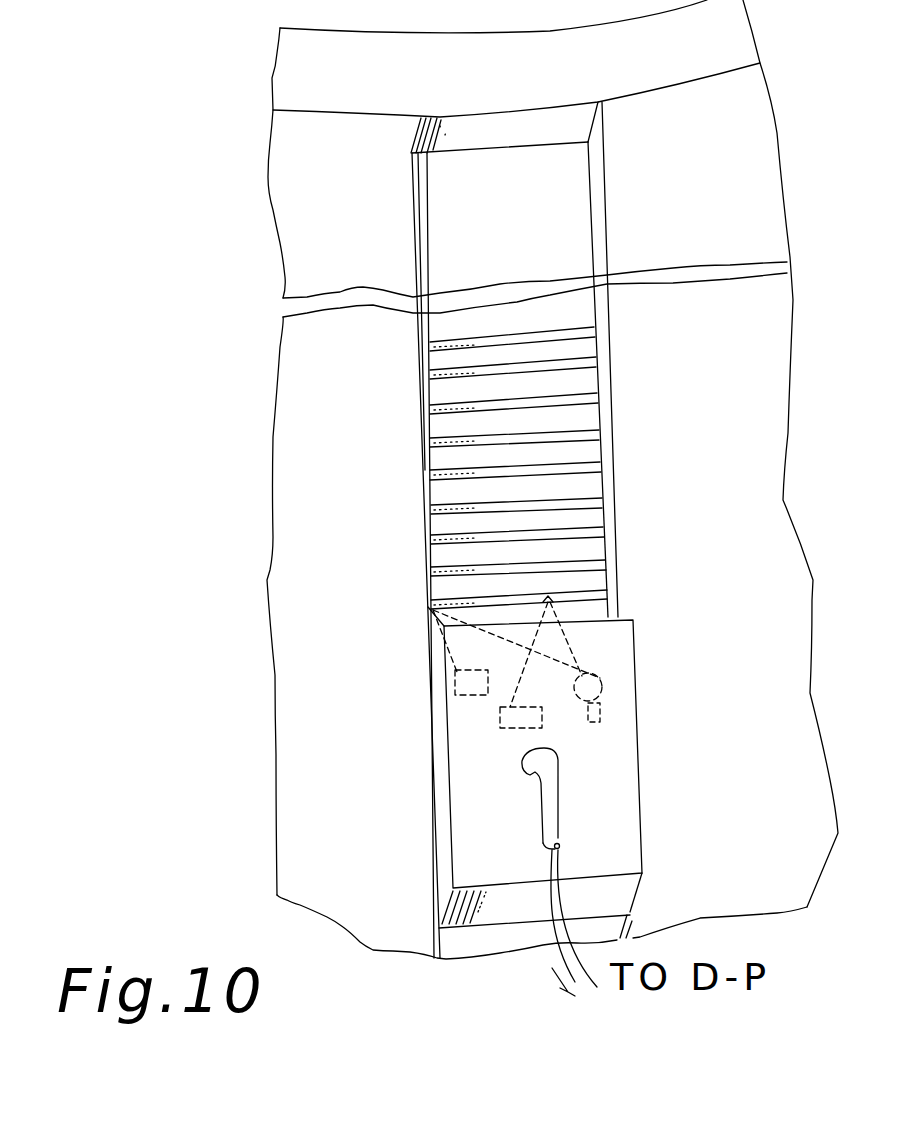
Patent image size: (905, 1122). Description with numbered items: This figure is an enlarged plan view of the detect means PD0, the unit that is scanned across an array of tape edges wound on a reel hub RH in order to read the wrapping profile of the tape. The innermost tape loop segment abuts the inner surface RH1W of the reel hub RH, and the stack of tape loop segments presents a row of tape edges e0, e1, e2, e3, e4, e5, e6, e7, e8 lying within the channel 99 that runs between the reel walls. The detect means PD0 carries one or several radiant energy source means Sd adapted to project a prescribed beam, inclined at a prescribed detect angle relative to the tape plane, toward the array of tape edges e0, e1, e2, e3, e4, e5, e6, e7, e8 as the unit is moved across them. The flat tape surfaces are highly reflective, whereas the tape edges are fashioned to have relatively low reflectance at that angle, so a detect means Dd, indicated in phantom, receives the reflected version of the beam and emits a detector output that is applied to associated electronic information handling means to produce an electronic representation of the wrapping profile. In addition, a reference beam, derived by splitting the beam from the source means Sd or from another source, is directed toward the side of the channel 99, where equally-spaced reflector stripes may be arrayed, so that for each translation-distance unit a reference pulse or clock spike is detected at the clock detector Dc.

The reel hub RH is at (270, 78).
The inner surface of reel hub RH1W is at (490, 137).
The channel 99 is at (545, 222).
The tape edge e8 is at (420, 366).
The tape edge e7 is at (600, 390).
The tape edge e6 is at (420, 443).
The tape edge e5 is at (603, 457).
The tape edge e4 is at (422, 508).
The tape edge e3 is at (603, 527).
The tape edge e2 is at (423, 573).
The tape edge e1 is at (612, 590).
The tape edge e0 is at (425, 638).
The detect means PD0 is at (625, 815).
The clock detector Dc is at (455, 685).
The detect means Dd is at (500, 717).
The radiant energy source means Sd is at (602, 688).